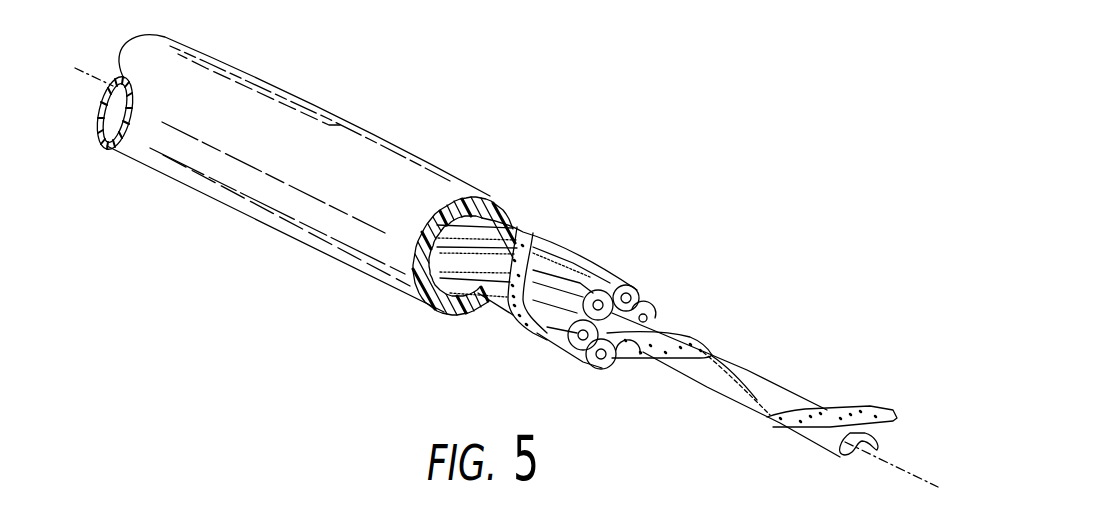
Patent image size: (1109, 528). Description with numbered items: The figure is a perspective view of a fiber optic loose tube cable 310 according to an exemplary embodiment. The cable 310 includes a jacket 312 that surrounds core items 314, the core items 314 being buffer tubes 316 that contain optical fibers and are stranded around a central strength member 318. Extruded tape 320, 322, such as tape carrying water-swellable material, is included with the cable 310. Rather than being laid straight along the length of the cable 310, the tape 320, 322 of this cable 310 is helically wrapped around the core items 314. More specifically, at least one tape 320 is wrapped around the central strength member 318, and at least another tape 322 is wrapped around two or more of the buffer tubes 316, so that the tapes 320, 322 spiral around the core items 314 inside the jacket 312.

The loose tube cable 310 is at (547, 158).
The jacket 312 is at (423, 283).
The core items 314 is at (573, 364).
The buffer tubes 316 is at (637, 288).
The central strength member 318 is at (750, 385).
The extruded tape 320 is at (860, 400).
The extruded tape 322 is at (503, 312).